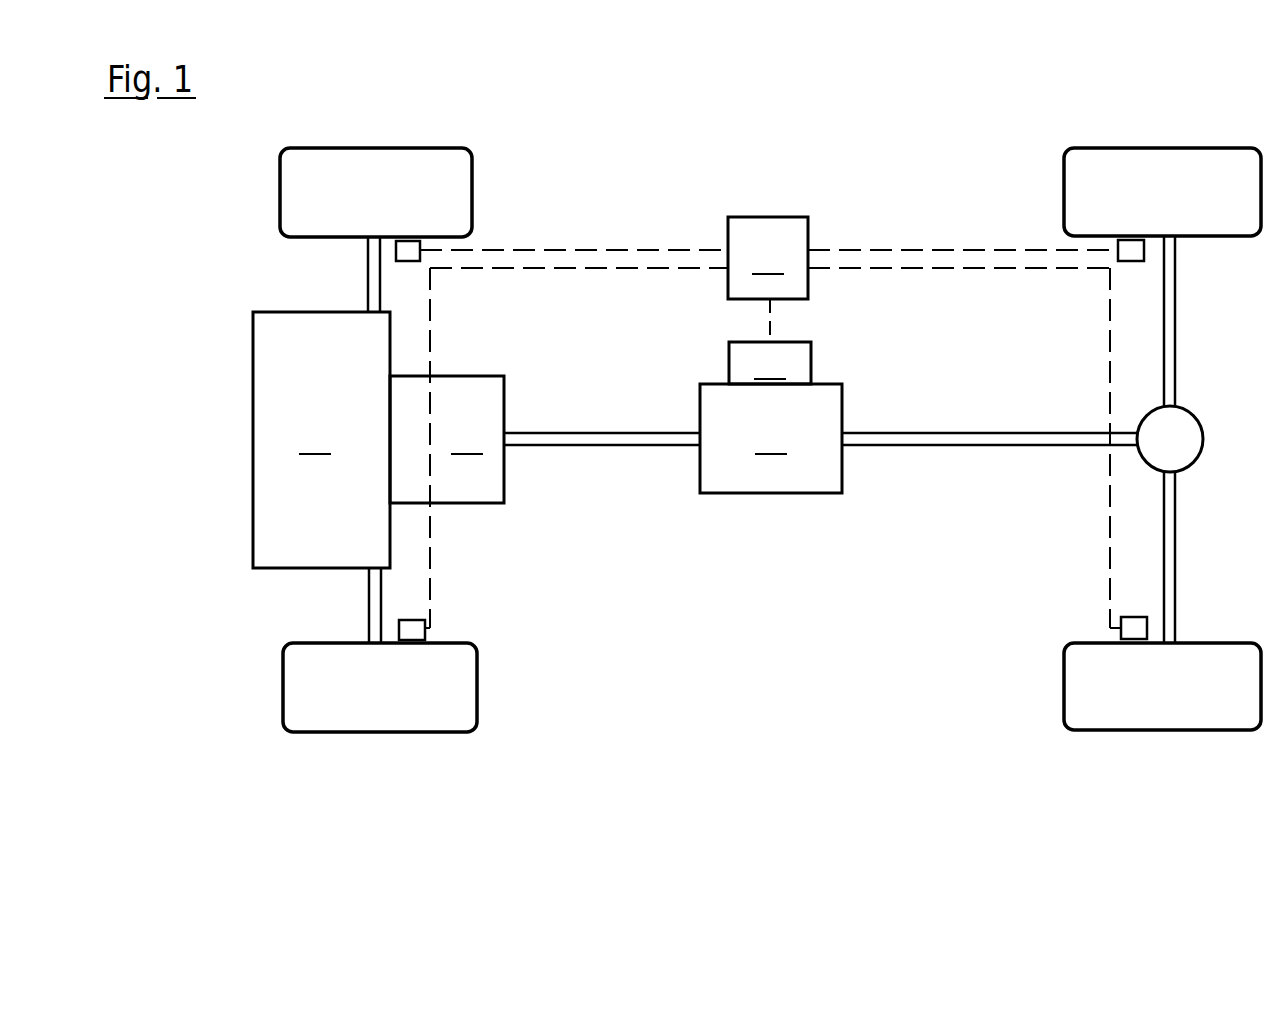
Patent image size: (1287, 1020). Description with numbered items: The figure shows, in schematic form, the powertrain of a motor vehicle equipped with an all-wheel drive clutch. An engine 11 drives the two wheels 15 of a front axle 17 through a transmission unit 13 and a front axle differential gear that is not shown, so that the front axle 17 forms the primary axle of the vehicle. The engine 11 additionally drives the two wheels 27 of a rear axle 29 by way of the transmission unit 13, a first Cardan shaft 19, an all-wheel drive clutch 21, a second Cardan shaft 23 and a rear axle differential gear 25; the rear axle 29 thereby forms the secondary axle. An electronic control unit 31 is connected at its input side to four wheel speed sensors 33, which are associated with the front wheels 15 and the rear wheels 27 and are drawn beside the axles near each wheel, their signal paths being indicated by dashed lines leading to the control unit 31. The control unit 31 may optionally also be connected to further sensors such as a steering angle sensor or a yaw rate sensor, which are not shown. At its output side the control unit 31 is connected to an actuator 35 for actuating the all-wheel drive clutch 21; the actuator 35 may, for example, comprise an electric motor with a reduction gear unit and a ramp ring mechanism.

The engine 11 is at (321, 440).
The transmission unit 13 is at (447, 439).
The wheels 15 is at (372, 167).
The front axle 17 is at (355, 602).
The first Cardan shaft 19 is at (600, 437).
The all-wheel drive clutch 21 is at (771, 438).
The second Cardan shaft 23 is at (944, 437).
The rear axle differential gear 25 is at (1182, 431).
The wheels 27 is at (1124, 168).
The rear axle 29 is at (1195, 575).
The electronic control unit 31 is at (770, 422).
The wheel speed sensors 33 is at (404, 248).
The actuator 35 is at (770, 363).